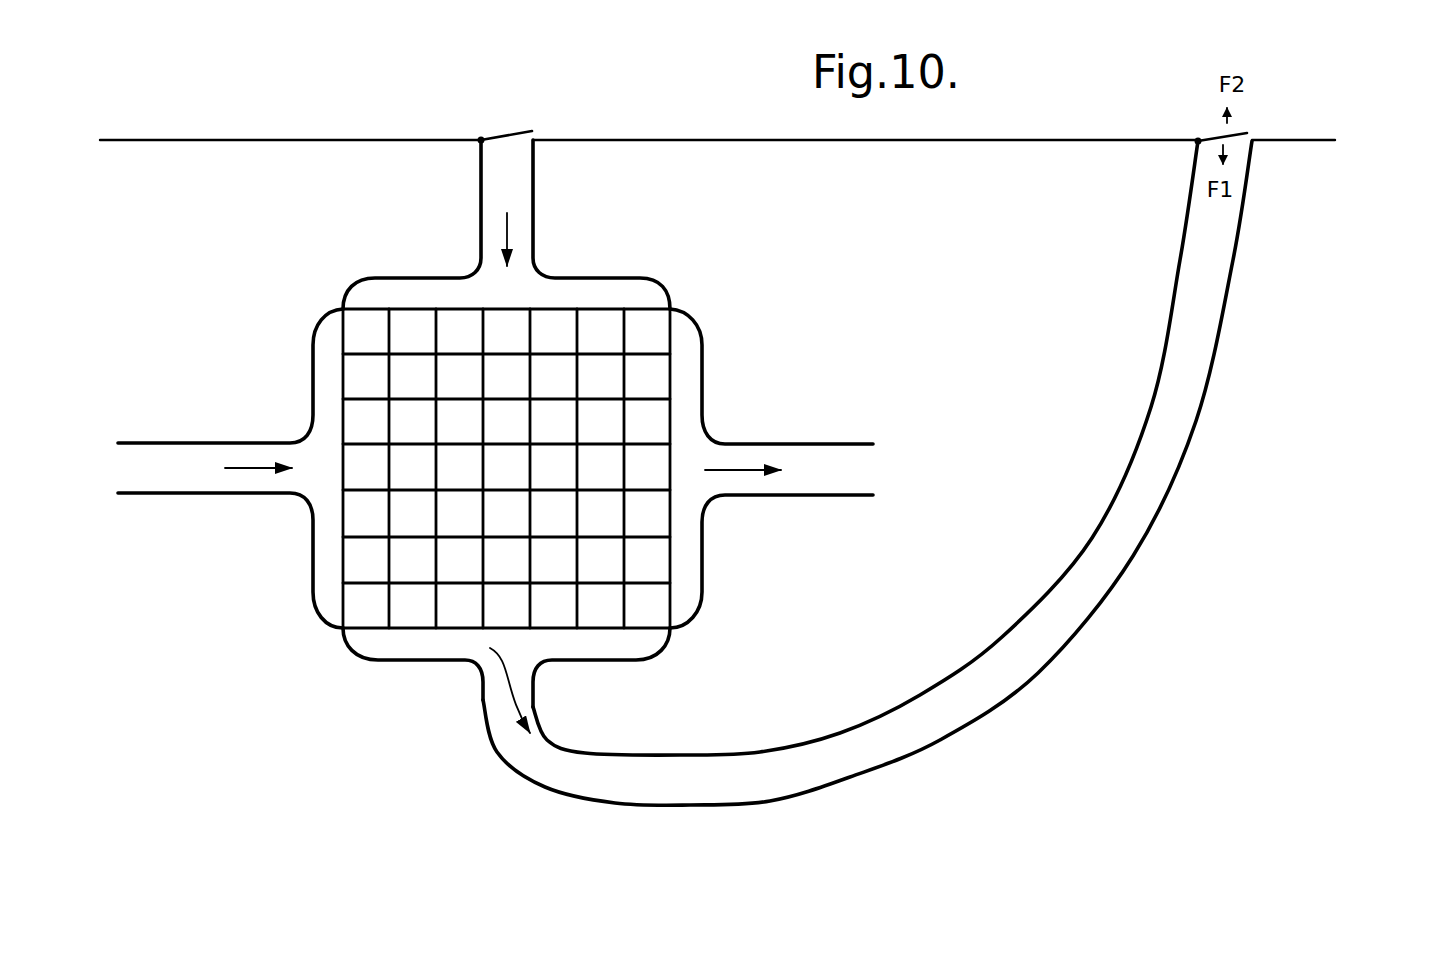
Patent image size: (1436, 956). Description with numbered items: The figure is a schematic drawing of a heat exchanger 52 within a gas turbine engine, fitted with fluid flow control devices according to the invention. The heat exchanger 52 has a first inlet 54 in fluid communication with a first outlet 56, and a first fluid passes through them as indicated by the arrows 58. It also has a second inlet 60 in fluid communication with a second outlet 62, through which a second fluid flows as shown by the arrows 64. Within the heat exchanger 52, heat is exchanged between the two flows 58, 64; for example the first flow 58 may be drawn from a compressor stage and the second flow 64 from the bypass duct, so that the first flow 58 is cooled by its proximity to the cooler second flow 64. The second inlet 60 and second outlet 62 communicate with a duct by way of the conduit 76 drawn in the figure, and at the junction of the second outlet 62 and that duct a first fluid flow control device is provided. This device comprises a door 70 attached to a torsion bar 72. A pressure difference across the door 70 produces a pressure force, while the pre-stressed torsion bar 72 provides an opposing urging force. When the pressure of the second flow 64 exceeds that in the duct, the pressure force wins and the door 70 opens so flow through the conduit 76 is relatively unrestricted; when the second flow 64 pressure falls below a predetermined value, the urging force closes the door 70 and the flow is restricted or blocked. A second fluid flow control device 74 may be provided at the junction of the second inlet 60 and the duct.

The heat exchanger 52 is at (495, 423).
The first inlet 54 is at (328, 356).
The first outlet 56 is at (688, 370).
The arrows indicating first fluid flow 58 is at (259, 468).
The second inlet 60 is at (422, 291).
The second outlet 62 is at (580, 647).
The arrows indicating second fluid flow 64 is at (507, 222).
The door 70 is at (1230, 106).
The torsion bar 72 is at (1197, 139).
The second fluid flow control device 74 is at (486, 108).
The conduit 76 is at (495, 173).